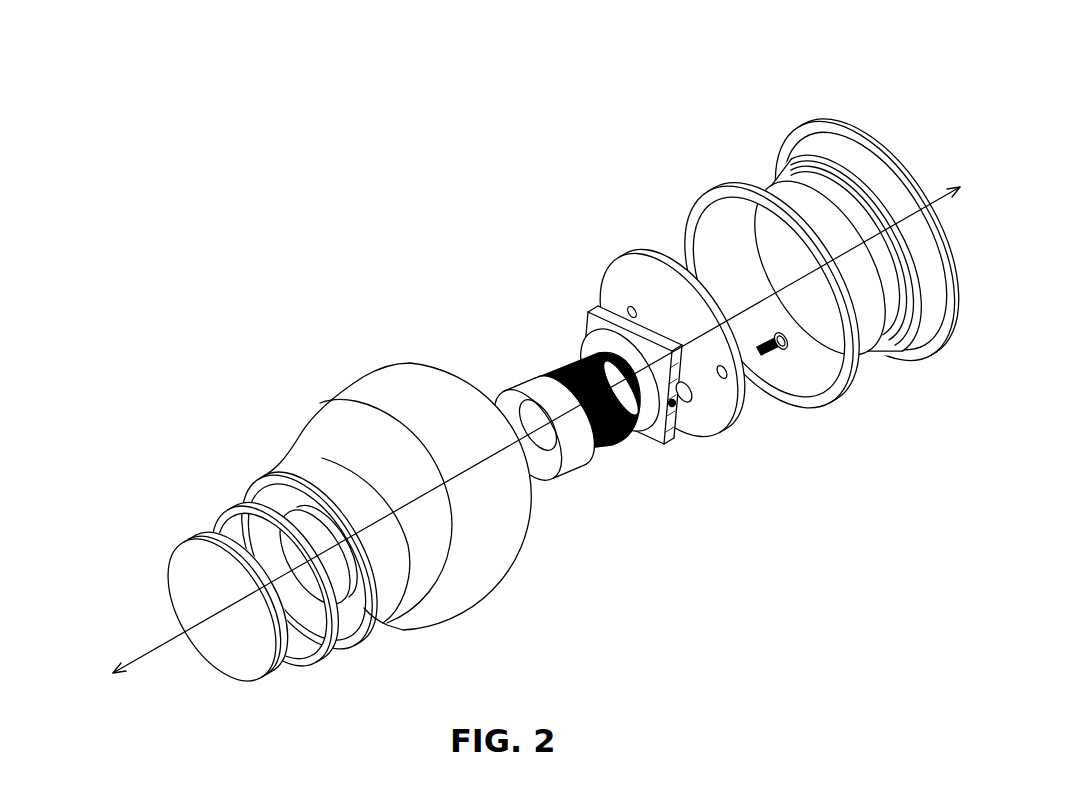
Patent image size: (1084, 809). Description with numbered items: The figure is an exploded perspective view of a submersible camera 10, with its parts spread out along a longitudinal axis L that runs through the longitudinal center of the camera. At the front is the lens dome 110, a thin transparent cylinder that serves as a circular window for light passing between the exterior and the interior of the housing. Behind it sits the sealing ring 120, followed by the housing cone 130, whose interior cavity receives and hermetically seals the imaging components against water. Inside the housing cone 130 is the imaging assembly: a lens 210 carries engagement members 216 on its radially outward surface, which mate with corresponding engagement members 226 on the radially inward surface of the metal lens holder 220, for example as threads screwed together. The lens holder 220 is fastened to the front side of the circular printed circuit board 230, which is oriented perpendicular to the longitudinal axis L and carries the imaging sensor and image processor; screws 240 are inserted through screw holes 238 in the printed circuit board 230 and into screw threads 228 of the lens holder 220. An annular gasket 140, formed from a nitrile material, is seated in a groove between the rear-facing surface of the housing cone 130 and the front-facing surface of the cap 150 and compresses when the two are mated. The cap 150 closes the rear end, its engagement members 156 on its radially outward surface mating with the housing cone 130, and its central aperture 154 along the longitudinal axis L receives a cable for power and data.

The submersible camera 10 is at (314, 186).
The lens dome 110 is at (190, 532).
The sealing ring 120 is at (243, 510).
The housing cone 130 is at (347, 395).
The gasket 140 is at (728, 190).
The cap 150 is at (851, 204).
The central aperture 154 is at (828, 252).
The engagement members 156 is at (793, 162).
The lens 210 is at (482, 353).
The engagement members 216 is at (557, 366).
The lens holder 220 is at (588, 384).
The engagement members 226 is at (623, 423).
The screw threads 228 is at (672, 405).
The printed circuit board 230 is at (672, 362).
The screw holes 238 is at (723, 377).
The screws 240 is at (768, 333).
The longitudinal axis L is at (520, 449).